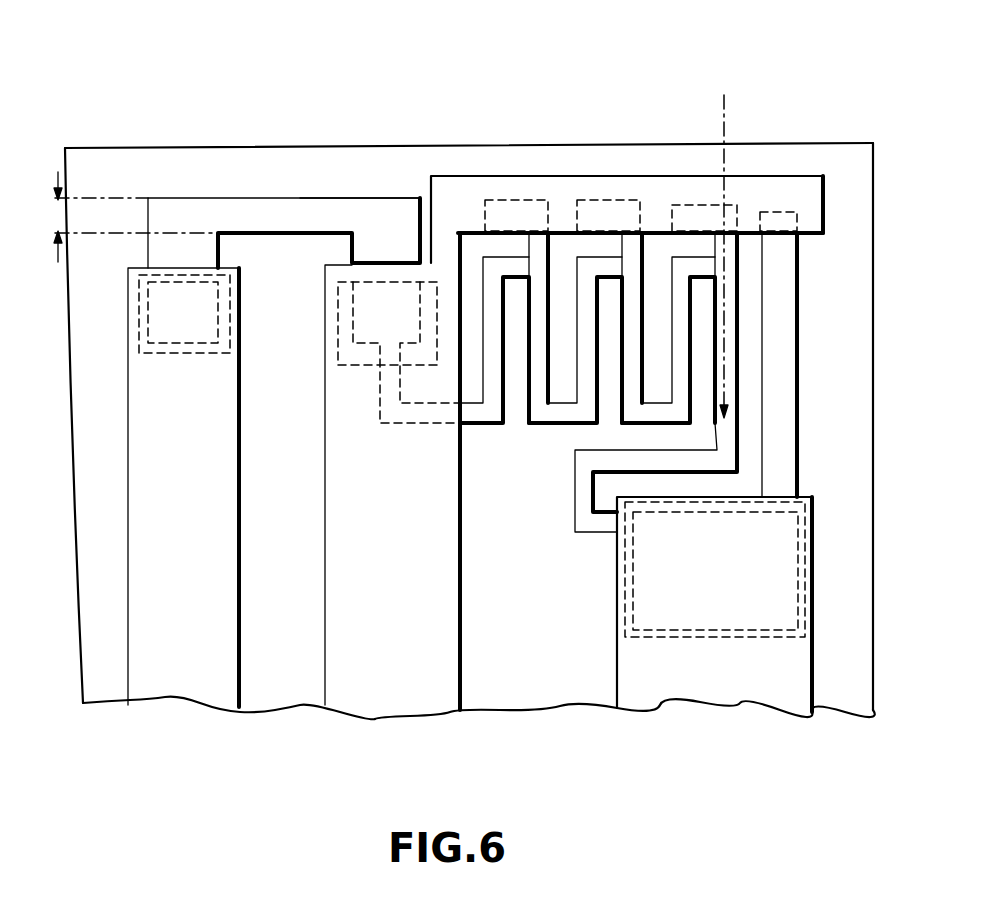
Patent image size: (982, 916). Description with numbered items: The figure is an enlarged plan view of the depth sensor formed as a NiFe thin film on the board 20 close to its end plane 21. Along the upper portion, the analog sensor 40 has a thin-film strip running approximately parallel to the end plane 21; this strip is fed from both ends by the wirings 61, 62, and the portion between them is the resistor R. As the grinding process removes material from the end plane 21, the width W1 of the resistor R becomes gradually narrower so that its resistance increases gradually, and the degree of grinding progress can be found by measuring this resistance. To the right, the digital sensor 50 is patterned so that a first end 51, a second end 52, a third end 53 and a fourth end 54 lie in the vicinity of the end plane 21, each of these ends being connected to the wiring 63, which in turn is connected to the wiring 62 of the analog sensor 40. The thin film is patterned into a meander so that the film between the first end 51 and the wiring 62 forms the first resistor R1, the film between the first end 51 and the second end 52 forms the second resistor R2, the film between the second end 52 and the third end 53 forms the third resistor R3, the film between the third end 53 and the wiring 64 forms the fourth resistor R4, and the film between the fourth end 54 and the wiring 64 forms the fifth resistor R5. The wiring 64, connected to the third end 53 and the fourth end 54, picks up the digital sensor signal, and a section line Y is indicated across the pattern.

The board 20 is at (838, 677).
The end plane 21 is at (125, 147).
The analog sensor 40 is at (240, 196).
The digital sensor 50 is at (665, 83).
The first end 51 is at (522, 206).
The second end 52 is at (590, 206).
The third end 53 is at (700, 208).
The fourth end 54 is at (781, 212).
The wiring 61 is at (180, 670).
The wiring 62 is at (390, 678).
The wiring 63 is at (459, 192).
The wiring 64 is at (695, 680).
The resistor R is at (330, 213).
The first resistor R1 is at (485, 412).
The second resistor R2 is at (543, 412).
The third resistor R3 is at (632, 412).
The fourth resistor R4 is at (585, 504).
The fifth resistor R5 is at (797, 377).
The width W1 is at (118, 217).
The section line Y is at (723, 254).